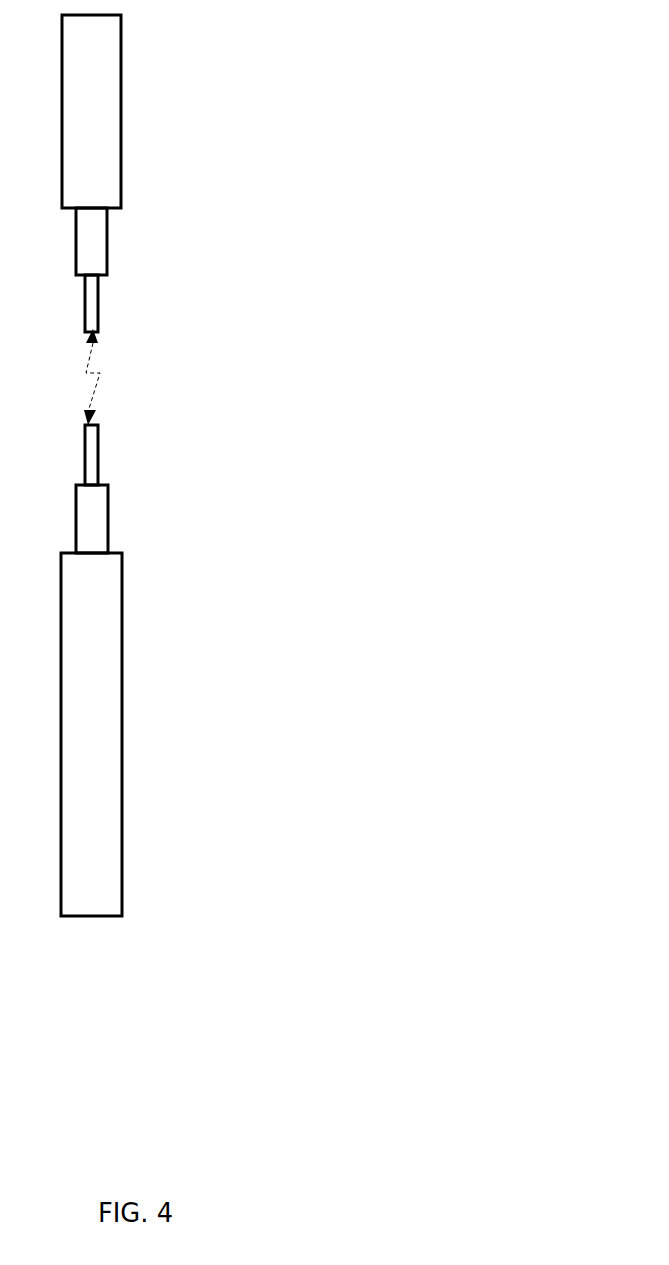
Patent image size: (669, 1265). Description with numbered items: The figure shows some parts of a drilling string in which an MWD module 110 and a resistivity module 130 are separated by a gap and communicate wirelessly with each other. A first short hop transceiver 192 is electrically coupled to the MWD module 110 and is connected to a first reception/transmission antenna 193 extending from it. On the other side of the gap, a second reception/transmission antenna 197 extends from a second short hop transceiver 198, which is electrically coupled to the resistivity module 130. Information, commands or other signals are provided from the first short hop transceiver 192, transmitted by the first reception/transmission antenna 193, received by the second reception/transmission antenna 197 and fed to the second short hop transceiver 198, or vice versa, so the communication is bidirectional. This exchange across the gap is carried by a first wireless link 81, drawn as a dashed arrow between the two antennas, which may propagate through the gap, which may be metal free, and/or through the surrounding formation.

The MWD module 110 is at (122, 148).
The first short hop transceiver 192 is at (107, 238).
The first reception/transmission antenna 193 is at (98, 298).
The first wireless link 81 is at (86, 373).
The second reception/transmission antenna 197 is at (98, 428).
The second short hop transceiver 198 is at (108, 532).
The resistivity module 130 is at (122, 667).